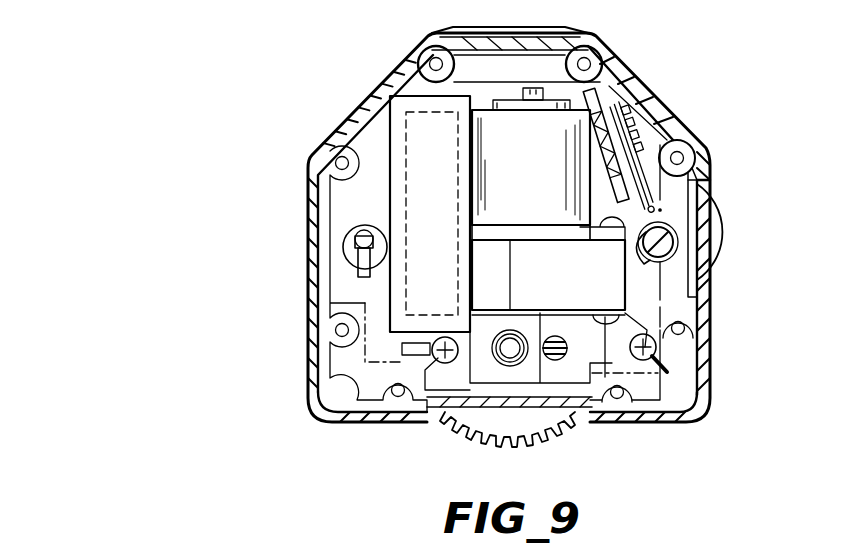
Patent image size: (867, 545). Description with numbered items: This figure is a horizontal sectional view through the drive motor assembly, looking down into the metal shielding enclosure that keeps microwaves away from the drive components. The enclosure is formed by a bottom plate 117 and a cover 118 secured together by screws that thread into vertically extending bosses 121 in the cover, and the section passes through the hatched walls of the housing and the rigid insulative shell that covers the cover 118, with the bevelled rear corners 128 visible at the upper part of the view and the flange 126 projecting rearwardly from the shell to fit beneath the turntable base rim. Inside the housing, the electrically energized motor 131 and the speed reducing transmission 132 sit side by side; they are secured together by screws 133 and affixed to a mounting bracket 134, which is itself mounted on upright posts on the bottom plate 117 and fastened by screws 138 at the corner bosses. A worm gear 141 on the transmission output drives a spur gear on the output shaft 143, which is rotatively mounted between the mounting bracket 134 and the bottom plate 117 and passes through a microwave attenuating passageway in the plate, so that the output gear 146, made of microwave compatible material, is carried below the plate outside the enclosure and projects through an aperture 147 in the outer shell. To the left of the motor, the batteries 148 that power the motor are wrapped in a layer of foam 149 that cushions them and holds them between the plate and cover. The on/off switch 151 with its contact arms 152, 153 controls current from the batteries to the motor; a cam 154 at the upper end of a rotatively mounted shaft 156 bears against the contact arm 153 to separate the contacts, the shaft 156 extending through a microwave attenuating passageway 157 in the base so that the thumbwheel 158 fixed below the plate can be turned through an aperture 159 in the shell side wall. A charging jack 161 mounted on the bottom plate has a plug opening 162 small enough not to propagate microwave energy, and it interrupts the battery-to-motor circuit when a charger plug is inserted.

The bottom plate 117 is at (348, 363).
The cover 118 is at (322, 193).
The bosses 121 is at (315, 160).
The flange 126 is at (487, 30).
The rear corners 128 is at (412, 58).
The motor 131 is at (531, 164).
The speed reducing transmission 132 is at (548, 282).
The screws 133 is at (600, 220).
The mounting bracket 134 is at (575, 325).
The screws 138 is at (428, 363).
The worm gear 141 is at (563, 353).
The output shaft 143 is at (510, 350).
The output gear 146 is at (527, 444).
The aperture 147 is at (433, 415).
The batteries 148 is at (400, 148).
The foam 149 is at (432, 105).
The on/off switch 151 is at (640, 88).
The contact arm 152 is at (672, 140).
The contact arm 153 is at (692, 162).
The cam 154 is at (675, 228).
The shaft 156 is at (690, 252).
The microwave attenuating passageway 157 is at (672, 266).
The thumbwheel 158 is at (705, 272).
The aperture 159 is at (705, 188).
The jack 161 is at (347, 266).
The plug opening 162 is at (365, 243).